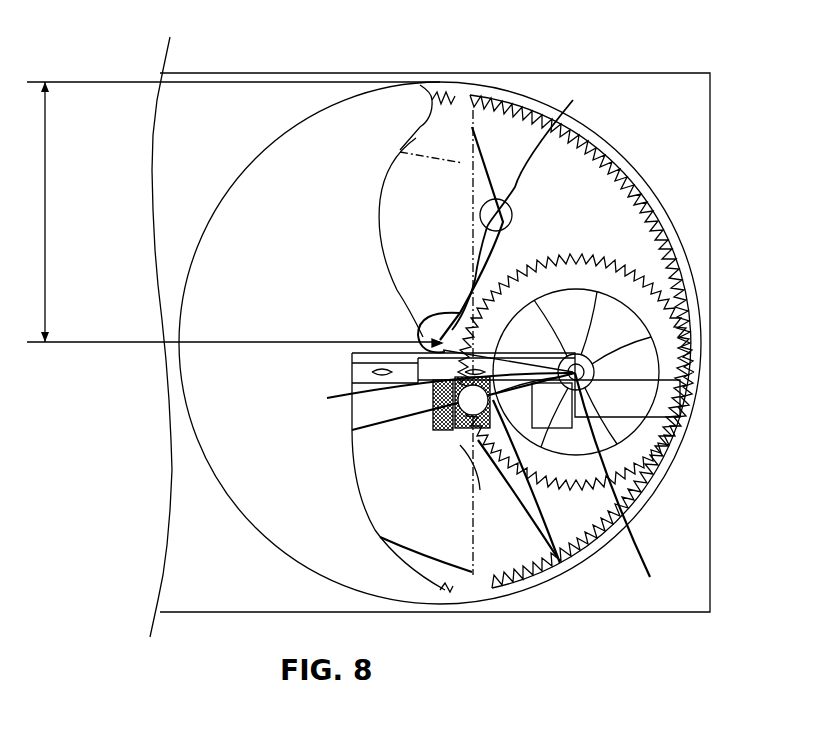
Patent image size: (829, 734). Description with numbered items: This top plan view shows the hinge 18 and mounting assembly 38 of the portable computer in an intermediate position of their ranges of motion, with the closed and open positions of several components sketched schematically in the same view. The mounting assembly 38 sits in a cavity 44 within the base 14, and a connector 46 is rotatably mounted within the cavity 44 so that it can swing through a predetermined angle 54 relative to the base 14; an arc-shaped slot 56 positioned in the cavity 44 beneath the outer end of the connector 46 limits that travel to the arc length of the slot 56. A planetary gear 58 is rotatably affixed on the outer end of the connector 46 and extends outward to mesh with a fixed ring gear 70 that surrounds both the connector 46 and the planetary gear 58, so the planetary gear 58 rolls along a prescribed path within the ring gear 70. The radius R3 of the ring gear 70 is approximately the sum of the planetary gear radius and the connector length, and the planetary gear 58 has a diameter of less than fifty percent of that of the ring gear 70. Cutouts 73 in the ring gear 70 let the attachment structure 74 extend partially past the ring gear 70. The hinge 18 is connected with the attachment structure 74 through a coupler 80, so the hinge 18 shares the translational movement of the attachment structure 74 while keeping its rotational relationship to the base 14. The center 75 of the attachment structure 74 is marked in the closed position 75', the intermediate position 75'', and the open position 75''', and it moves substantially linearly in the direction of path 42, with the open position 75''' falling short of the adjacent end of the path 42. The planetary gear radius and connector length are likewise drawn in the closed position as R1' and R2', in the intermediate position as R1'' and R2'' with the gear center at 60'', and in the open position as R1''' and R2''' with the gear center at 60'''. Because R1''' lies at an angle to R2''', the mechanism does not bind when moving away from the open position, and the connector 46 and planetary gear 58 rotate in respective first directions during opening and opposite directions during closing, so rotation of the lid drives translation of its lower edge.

The base 14 is at (178, 167).
The radius of ring gear R3 is at (234, 214).
The hinge 18 is at (345, 375).
The mounting assembly 38 is at (622, 245).
The path 42 is at (400, 150).
The cavity 44 is at (397, 203).
The connector 46 is at (535, 340).
The predetermined angle 54 is at (437, 401).
The arc-shaped slot 56 is at (525, 240).
The planetary gear 58 is at (590, 460).
The center of planetary gear in intermediate position 60'' is at (623, 481).
The center of planetary gear in open position 60''' is at (534, 208).
The ring gear 70 is at (635, 178).
The cutouts 73 is at (473, 110).
The attachment structure 74 is at (460, 432).
The center of attachment feature 75 is at (511, 496).
The center of attachment feature in closed position 75' is at (379, 558).
The center of attachment feature in intermediate position 75'' is at (380, 384).
The center of attachment feature in open position 75''' is at (425, 79).
The coupler 80 is at (640, 407).
The planetary gear radius in closed position R1' is at (501, 551).
The planetary gear radius in intermediate position R1'' is at (564, 610).
The planetary gear radius in open position R1''' is at (548, 90).
The connector length in closed position R2' is at (435, 481).
The connector length in intermediate position R2'' is at (405, 292).
The connector length in open position R2''' is at (387, 258).